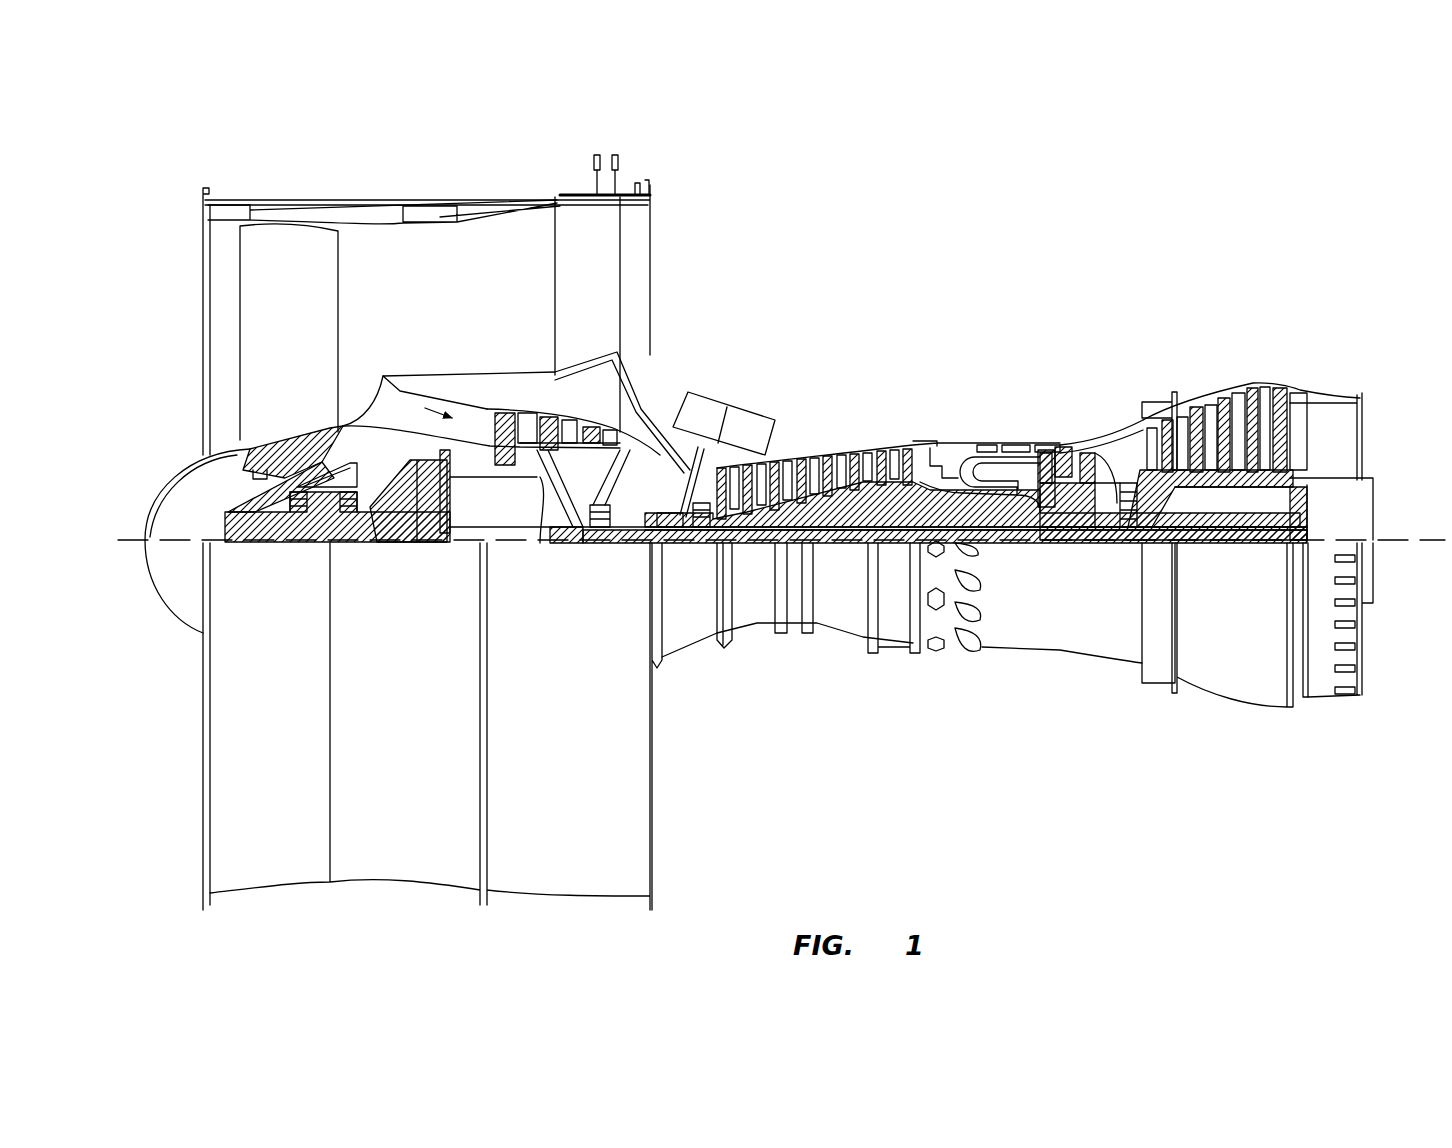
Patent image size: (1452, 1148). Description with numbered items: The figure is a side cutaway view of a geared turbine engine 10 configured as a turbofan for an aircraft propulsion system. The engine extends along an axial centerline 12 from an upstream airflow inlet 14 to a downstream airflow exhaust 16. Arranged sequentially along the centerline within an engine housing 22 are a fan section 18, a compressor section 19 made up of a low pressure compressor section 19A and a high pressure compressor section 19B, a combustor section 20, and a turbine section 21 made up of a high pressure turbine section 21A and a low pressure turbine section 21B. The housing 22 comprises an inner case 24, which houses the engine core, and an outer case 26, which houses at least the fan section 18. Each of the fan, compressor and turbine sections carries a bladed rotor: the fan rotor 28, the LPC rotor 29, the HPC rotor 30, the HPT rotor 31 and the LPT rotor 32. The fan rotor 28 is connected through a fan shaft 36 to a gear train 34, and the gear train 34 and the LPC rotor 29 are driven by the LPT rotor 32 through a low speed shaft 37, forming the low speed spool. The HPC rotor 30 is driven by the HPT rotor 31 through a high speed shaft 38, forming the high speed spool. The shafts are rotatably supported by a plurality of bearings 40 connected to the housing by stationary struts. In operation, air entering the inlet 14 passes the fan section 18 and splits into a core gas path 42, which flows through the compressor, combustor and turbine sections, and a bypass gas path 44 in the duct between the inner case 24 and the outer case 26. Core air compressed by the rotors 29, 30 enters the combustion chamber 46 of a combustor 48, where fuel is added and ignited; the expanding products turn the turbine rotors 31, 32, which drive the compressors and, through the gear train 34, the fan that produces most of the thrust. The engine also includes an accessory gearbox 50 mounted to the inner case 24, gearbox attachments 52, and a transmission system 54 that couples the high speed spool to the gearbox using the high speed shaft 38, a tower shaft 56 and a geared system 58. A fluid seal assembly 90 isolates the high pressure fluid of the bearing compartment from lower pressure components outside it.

The geared turbine engine 10 is at (170, 176).
The axial centerline 12 is at (1428, 550).
The upstream airflow inlet 14 is at (205, 276).
The downstream airflow exhaust 16 is at (1365, 415).
The fan section 18 is at (390, 170).
The compressor section 19 is at (470, 108).
The low pressure compressor (LPC) section 19A is at (655, 157).
The high pressure compressor (HPC) section 19B is at (893, 367).
The combustor section 20 is at (918, 363).
The turbine section 21 is at (1038, 290).
The high pressure turbine (HPT) section 21A is at (1120, 363).
The low pressure turbine (LPT) section 21B is at (1320, 363).
The engine housing 22 is at (676, 668).
The inner case 24 is at (893, 650).
The outer case 26 is at (582, 905).
The fan rotor 28 is at (243, 457).
The LPC rotor 29 is at (543, 520).
The HPC rotor 30 is at (840, 500).
The HPT rotor 31 is at (1063, 540).
The LPT rotor 32 is at (1223, 482).
The gear train 34 is at (430, 545).
The fan shaft 36 is at (280, 548).
The low speed shaft 37 is at (1243, 545).
The high speed shaft 38 is at (985, 540).
The bearings 40 is at (318, 540).
The core gas path 42 is at (405, 405).
The bypass gas path 44 is at (487, 298).
The combustion chamber 46 is at (985, 468).
The combustor 48 is at (1010, 460).
The accessory gearbox 50 is at (712, 413).
The gearbox attachments 52 is at (758, 430).
The transmission system 54 is at (680, 466).
The tower shaft 56 is at (750, 462).
The geared system 58 is at (668, 548).
The fluid seal assembly 90 is at (630, 509).